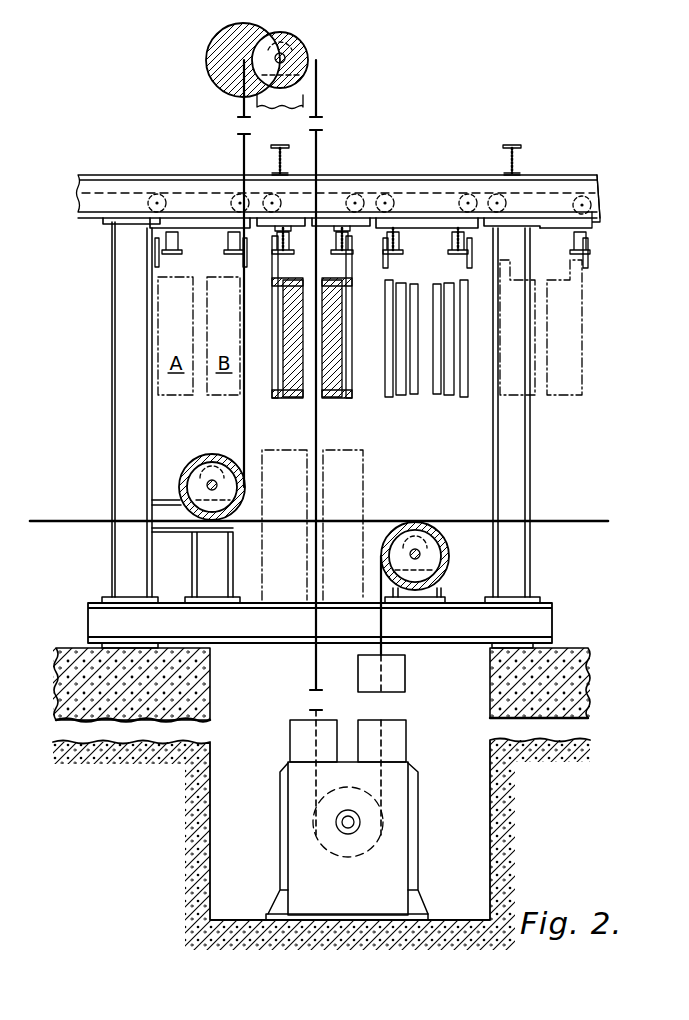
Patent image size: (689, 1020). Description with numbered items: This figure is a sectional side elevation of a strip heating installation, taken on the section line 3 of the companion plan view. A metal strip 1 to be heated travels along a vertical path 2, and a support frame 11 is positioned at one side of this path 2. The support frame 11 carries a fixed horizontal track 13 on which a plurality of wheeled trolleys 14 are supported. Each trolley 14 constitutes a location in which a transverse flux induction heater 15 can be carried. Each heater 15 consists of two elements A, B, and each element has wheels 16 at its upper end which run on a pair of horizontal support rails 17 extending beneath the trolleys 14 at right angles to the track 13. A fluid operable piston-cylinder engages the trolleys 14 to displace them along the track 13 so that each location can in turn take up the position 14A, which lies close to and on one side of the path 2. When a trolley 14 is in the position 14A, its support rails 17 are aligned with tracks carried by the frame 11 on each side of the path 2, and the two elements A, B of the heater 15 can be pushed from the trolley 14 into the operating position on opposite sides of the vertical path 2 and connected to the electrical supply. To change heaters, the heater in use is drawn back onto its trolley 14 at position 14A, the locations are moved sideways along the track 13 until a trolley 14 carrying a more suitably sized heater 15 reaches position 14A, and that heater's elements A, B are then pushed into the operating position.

The metal strip 1 is at (345, 447).
The vertical path 2 is at (317, 158).
The section line 3 is at (96, 338).
The support frame 11 is at (431, 176).
The fixed horizontal track 13 is at (599, 213).
The wheeled trolleys 14 is at (187, 200).
The position 14A is at (336, 200).
The transverse flux induction heater 15 is at (569, 399).
The wheels 16 is at (458, 243).
The horizontal support rails 17 is at (226, 257).
The heater element A is at (292, 395).
The heater element B is at (332, 396).